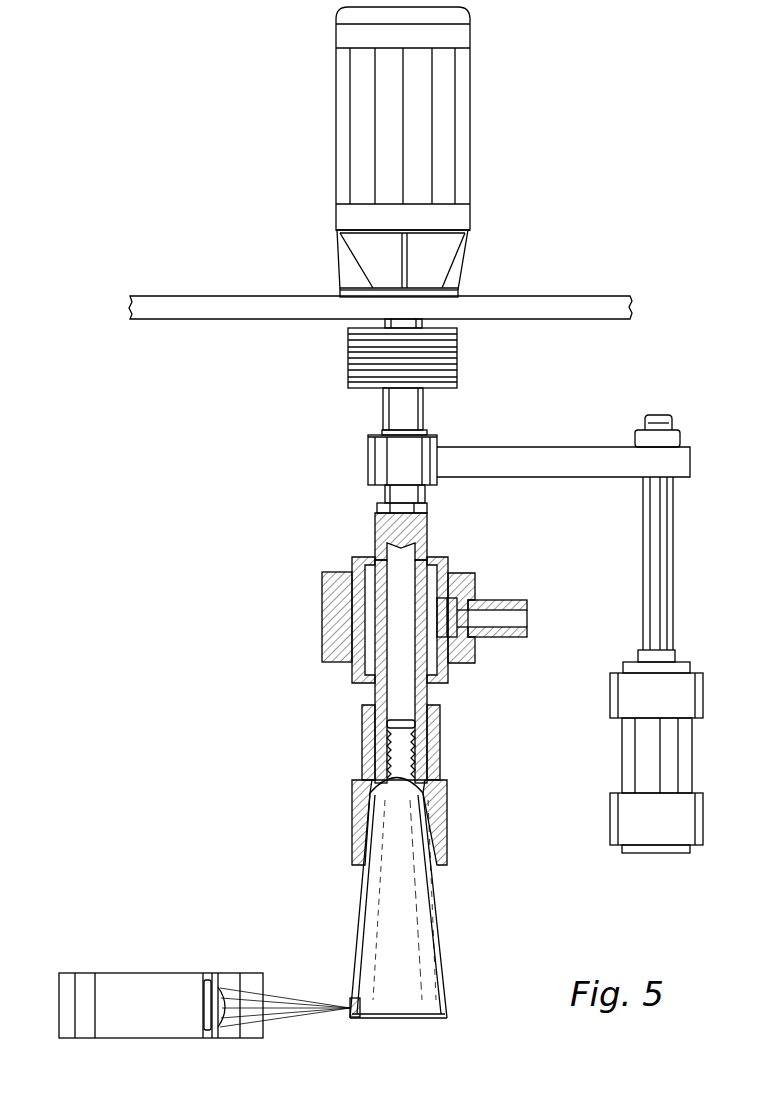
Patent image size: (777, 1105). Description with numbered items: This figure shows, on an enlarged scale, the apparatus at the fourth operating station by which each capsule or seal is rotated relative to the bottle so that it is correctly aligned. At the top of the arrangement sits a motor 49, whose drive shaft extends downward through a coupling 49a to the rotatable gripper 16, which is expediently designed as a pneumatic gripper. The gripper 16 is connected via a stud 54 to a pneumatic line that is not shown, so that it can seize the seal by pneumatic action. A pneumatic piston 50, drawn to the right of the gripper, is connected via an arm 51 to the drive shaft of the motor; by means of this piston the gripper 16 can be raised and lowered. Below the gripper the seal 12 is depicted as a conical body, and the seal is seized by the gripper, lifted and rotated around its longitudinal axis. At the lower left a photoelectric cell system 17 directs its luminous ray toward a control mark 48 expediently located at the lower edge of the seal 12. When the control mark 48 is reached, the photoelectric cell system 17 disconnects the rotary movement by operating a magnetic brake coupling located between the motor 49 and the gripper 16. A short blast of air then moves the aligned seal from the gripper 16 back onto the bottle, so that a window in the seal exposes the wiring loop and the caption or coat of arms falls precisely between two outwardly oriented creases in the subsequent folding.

The motor 49 is at (465, 137).
The coupling 49a is at (458, 357).
The arm 51 is at (513, 457).
The pneumatic piston 50 is at (635, 753).
The gripper 16 is at (420, 560).
The stud 54 is at (517, 607).
The conical container 12 is at (428, 918).
The control mark 48 is at (350, 1000).
The photoelectric cell system 17 is at (172, 982).